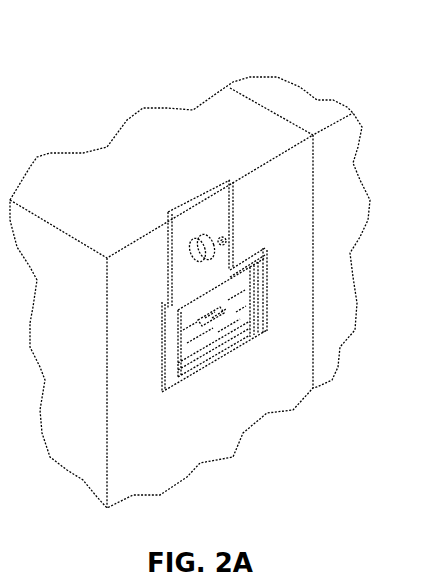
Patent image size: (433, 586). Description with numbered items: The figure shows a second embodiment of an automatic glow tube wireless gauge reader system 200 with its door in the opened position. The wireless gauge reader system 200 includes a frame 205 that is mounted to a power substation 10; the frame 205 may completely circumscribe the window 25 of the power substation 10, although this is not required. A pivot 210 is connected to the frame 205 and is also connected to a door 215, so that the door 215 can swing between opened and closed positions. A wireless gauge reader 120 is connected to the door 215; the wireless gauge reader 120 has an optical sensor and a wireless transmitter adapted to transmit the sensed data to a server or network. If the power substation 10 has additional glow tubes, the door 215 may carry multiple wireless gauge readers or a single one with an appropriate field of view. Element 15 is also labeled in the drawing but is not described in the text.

The power substation 10 is at (305, 103).
The wireless gauge reader system 200 is at (140, 318).
The door 215 is at (206, 204).
The wireless gauge reader 120 is at (205, 237).
The pivot 210 is at (178, 310).
The frame 205 is at (258, 258).
The window 25 is at (238, 318).
The latch 15 is at (212, 323).